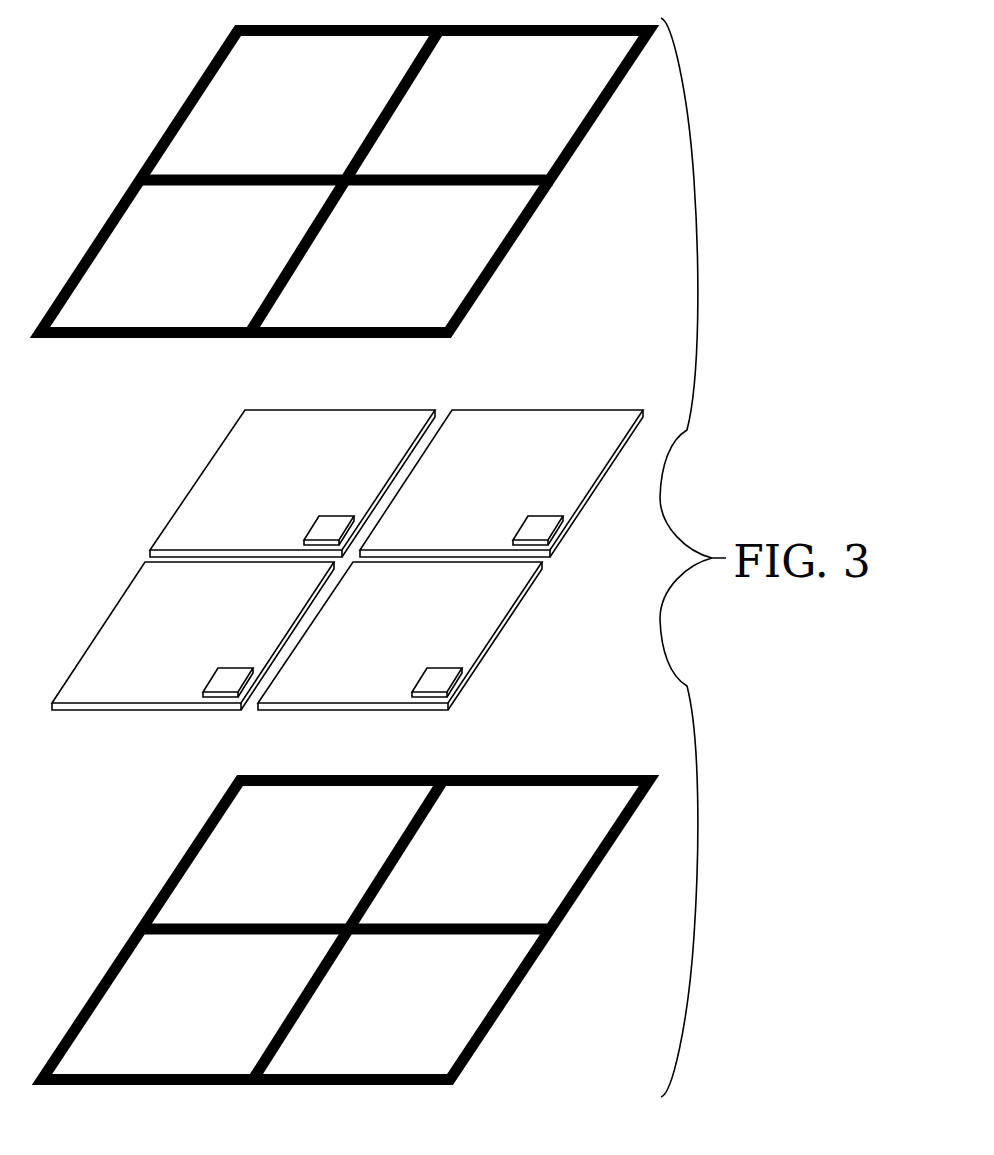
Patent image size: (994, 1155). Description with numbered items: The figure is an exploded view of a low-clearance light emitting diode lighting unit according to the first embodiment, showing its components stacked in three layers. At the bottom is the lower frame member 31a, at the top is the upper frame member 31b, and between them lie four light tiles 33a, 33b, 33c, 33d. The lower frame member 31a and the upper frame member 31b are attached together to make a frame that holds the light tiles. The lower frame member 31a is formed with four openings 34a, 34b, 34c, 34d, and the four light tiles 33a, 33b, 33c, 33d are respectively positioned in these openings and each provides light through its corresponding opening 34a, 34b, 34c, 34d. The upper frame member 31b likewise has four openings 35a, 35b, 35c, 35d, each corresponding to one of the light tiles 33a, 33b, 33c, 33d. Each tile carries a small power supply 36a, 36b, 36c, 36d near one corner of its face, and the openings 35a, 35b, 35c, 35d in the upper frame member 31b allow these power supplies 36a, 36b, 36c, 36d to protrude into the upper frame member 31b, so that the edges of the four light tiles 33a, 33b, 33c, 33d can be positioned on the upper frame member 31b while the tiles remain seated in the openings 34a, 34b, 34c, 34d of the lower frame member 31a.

The lower frame member 31a is at (178, 862).
The upper frame member 31b is at (183, 107).
The light tile 33a is at (292, 483).
The light tile 33b is at (501, 483).
The light tile 33c is at (193, 636).
The light tile 33d is at (400, 636).
The opening of the lower frame member 34a is at (294, 855).
The opening of the lower frame member 34b is at (500, 855).
The opening of the lower frame member 34c is at (193, 1004).
The opening of the lower frame member 34d is at (406, 1004).
The opening of the upper frame member 35a is at (290, 105).
The opening of the upper frame member 35b is at (498, 105).
The opening of the upper frame member 35c is at (190, 256).
The opening of the upper frame member 35d is at (403, 256).
The power supply 36a is at (333, 530).
The power supply 36b is at (542, 528).
The power supply 36c is at (228, 688).
The power supply 36d is at (437, 687).